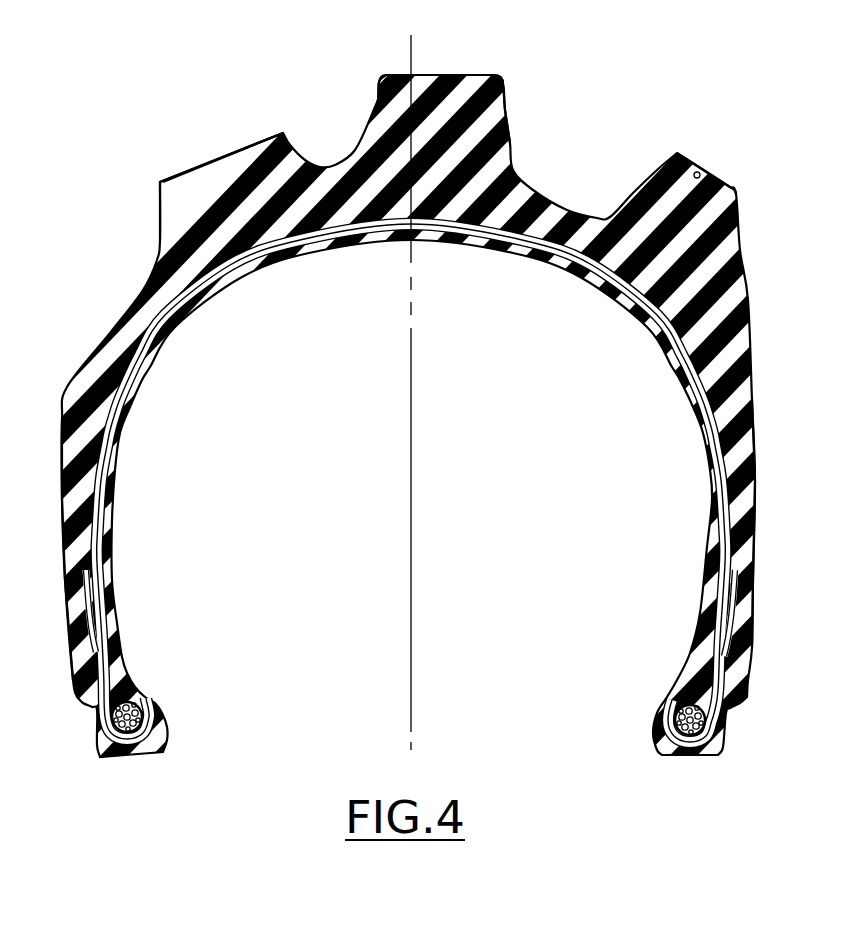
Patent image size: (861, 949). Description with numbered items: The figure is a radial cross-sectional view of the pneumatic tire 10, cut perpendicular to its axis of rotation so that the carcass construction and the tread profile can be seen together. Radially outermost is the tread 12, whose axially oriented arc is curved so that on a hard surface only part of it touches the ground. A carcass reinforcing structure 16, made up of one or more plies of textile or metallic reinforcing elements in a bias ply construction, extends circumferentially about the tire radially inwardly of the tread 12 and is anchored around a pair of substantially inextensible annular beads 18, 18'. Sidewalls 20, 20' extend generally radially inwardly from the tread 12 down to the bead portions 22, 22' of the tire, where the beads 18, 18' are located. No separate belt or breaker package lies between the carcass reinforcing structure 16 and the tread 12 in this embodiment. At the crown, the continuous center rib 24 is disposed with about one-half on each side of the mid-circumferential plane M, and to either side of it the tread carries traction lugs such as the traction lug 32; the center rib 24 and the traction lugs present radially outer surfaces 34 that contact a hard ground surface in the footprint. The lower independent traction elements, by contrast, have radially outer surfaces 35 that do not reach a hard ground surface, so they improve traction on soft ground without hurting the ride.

The tire 10 is at (190, 105).
The tread 12 is at (166, 210).
The carcass reinforcing structure 16 is at (580, 272).
The annular bead 18 is at (157, 714).
The annular bead 18' is at (653, 733).
The sidewall 20 is at (49, 550).
The sidewall 20' is at (776, 523).
The bead portion 22 is at (76, 654).
The bead portion 22' is at (755, 635).
The center rib 24 is at (493, 113).
The traction lug 32 is at (698, 172).
The radially outer surface 34 is at (473, 78).
The radially outer surface 35 is at (244, 146).
The mid-circumferential plane M is at (413, 58).